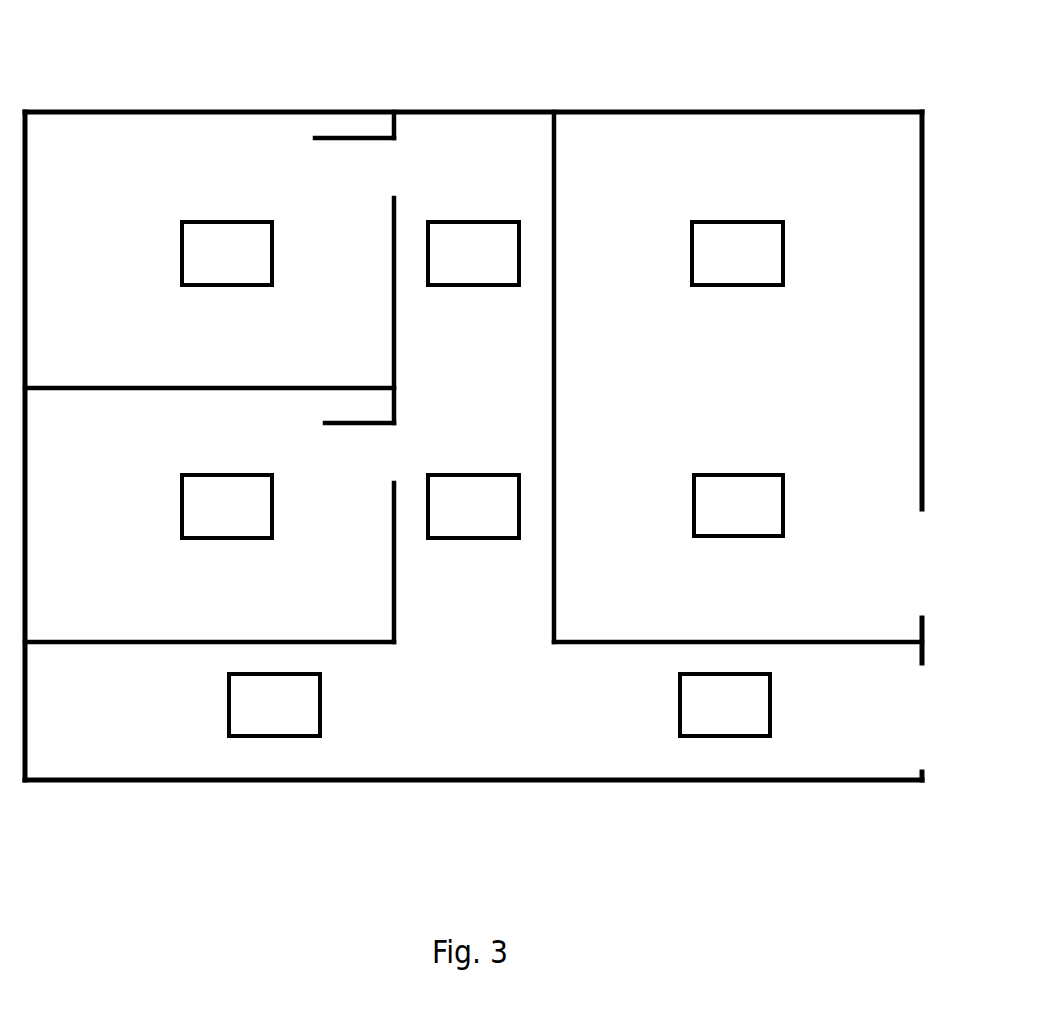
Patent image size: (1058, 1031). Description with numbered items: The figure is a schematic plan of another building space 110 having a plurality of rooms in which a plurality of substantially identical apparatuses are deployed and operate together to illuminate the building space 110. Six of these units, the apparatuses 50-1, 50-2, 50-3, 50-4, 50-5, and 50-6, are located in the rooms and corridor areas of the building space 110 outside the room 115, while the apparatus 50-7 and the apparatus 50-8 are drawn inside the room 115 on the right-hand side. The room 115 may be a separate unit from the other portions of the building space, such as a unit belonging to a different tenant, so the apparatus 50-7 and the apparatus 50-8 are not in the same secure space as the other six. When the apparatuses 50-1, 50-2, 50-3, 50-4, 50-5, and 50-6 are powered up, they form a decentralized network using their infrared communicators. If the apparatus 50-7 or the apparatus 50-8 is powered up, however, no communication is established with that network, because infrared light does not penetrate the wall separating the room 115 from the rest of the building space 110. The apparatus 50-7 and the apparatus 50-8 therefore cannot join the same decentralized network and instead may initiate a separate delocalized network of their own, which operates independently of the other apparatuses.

The building space 110 is at (692, 110).
The room 115 is at (760, 181).
The apparatus 50-1 is at (202, 266).
The apparatus 50-2 is at (448, 266).
The apparatus 50-3 is at (202, 519).
The apparatus 50-4 is at (448, 519).
The apparatus 50-5 is at (249, 717).
The apparatus 50-6 is at (700, 717).
The apparatus 50-7 is at (712, 266).
The apparatus 50-8 is at (713, 518).